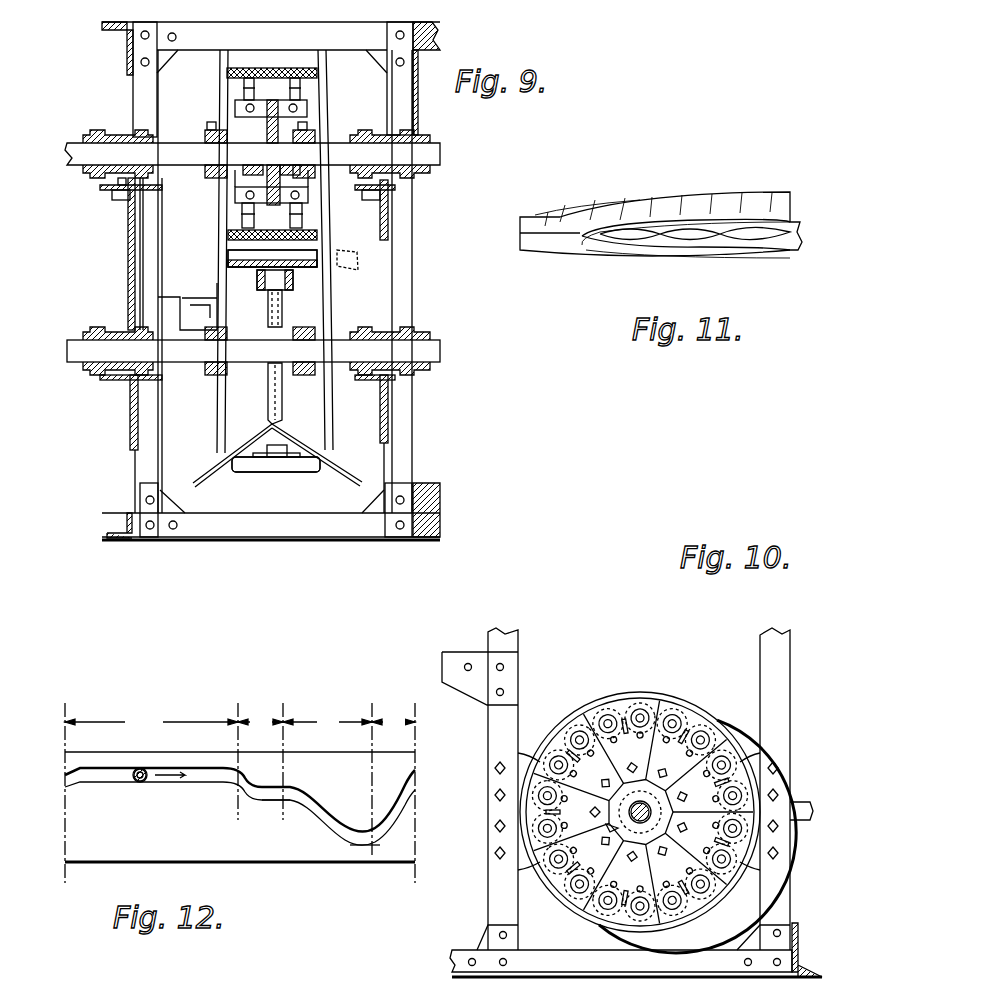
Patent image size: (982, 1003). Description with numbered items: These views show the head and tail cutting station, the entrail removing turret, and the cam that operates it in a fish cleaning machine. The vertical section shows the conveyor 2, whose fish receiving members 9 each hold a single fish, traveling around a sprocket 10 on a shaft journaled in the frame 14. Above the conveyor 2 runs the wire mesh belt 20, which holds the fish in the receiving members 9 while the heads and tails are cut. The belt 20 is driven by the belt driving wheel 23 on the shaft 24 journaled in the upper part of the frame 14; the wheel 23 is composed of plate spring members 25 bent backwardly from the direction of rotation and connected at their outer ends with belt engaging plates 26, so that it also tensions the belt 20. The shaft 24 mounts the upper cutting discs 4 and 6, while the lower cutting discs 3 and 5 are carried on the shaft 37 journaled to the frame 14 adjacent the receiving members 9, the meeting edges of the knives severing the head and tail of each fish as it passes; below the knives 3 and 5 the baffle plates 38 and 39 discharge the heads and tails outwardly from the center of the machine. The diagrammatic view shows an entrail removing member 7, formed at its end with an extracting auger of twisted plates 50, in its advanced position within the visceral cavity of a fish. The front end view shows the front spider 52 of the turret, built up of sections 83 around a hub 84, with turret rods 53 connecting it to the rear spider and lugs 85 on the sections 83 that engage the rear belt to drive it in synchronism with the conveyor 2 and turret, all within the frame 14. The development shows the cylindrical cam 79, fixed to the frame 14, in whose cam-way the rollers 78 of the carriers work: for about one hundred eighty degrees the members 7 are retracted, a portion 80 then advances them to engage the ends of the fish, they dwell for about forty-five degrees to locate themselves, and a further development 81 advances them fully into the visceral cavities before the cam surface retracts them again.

In FIG. 9, the conveyor 2 is at (268, 472).
In FIG. 9, the lower cutting disc knife 3 is at (327, 300).
In FIG. 9, the upper cutting disc knife 4 is at (325, 214).
In FIG. 9, the lower cutting disc knife 5 is at (222, 395).
In FIG. 9, the upper cutting disc knife 6 is at (235, 200).
In FIG. 11, the entrail removing member 7 is at (800, 250).
In FIG. 9, the fish receiving member 9 is at (248, 257).
In FIG. 9, the sprocket 10 is at (281, 406).
In FIG. 9, the frame 14 is at (419, 250).
In FIG. 10, the frame 14 is at (794, 654).
In FIG. 9, the belt 20 is at (277, 68).
In FIG. 9, the belt driving wheel 23 is at (259, 125).
In FIG. 9, the shaft 24 is at (174, 152).
In FIG. 9, the plate spring member 25 is at (246, 90).
In FIG. 9, the belt engaging plate 26 is at (318, 74).
In FIG. 9, the shaft 37 is at (350, 355).
In FIG. 9, the baffle plate 38 is at (210, 470).
In FIG. 9, the baffle plate 39 is at (342, 470).
In FIG. 11, the twisted plate 50 is at (720, 232).
In FIG. 10, the front spider 52 is at (757, 768).
In FIG. 10, the turret rod 53 is at (658, 736).
In FIG. 12, the roller 78 is at (145, 780).
In FIG. 10, the cylindrical cam 79 is at (627, 684).
In FIG. 12, the cylindrical cam 79 is at (111, 792).
In FIG. 12, the cam portion 80 is at (265, 800).
In FIG. 12, the cam development 81 is at (366, 846).
In FIG. 10, the spider section 83 is at (694, 718).
In FIG. 10, the hub 84 is at (620, 856).
In FIG. 10, the lug 85 is at (612, 790).